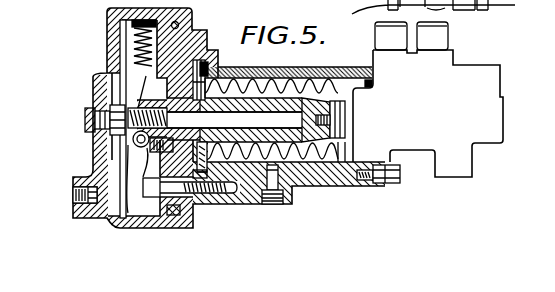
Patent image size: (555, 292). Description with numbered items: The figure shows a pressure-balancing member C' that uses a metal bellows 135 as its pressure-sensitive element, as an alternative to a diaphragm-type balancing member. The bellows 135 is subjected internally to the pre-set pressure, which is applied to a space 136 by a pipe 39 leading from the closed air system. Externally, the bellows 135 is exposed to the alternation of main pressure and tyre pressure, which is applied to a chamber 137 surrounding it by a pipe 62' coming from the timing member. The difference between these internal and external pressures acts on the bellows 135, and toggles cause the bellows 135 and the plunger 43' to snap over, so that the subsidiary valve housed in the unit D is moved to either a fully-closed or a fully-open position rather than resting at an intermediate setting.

The pipe 39 is at (104, 238).
The space 136 is at (143, 202).
The metal bellows 135 is at (259, 152).
The pipe 62' is at (292, 207).
The chamber 137 is at (340, 157).
The plunger 43' is at (360, 120).
The balancing member C' is at (357, 57).
The unit D is at (463, 60).